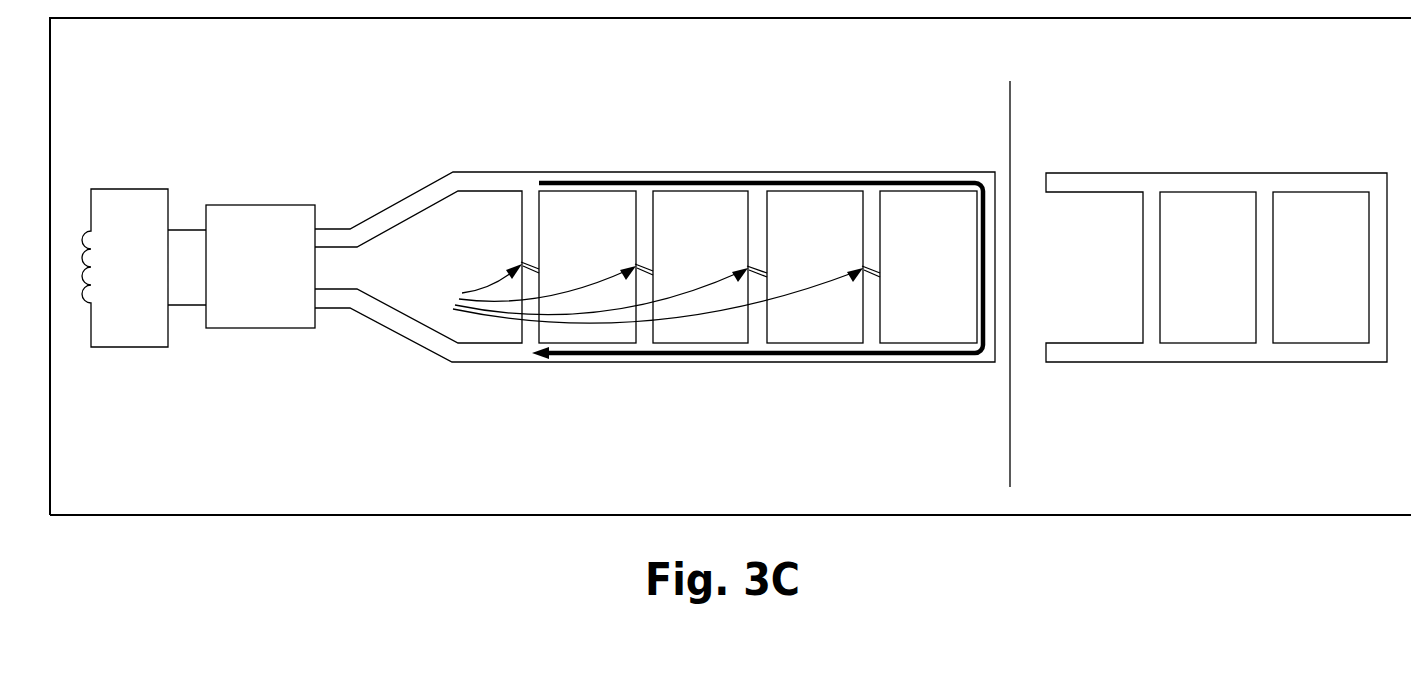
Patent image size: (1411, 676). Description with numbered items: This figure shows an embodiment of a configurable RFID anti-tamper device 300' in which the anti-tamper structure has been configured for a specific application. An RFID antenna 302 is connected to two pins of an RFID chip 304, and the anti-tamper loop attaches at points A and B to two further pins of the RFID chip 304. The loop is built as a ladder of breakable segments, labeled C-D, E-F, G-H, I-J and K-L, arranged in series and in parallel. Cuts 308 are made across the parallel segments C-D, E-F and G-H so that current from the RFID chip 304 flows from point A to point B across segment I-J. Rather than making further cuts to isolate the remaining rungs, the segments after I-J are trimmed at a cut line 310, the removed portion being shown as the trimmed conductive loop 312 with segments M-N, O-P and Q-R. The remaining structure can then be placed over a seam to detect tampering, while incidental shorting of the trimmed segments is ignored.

The RFID antenna 302 is at (108, 152).
The RFID chip 304 is at (247, 205).
The configurable RFID anti-tamper device 300' is at (655, 252).
The cuts 308 is at (646, 292).
The cut line 310 is at (1010, 128).
The trimmed conductive loop 312 is at (1216, 362).